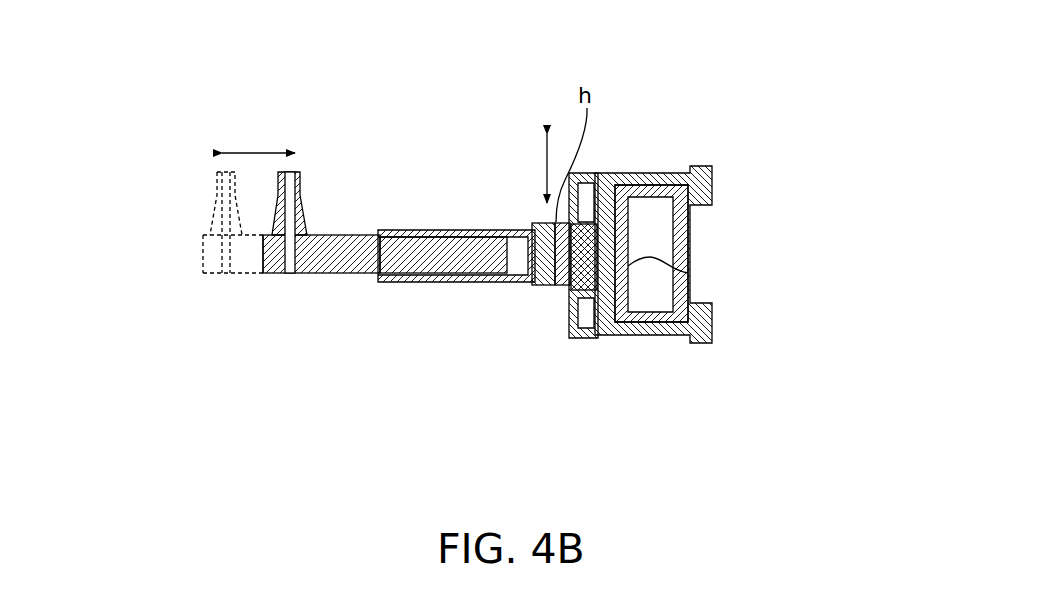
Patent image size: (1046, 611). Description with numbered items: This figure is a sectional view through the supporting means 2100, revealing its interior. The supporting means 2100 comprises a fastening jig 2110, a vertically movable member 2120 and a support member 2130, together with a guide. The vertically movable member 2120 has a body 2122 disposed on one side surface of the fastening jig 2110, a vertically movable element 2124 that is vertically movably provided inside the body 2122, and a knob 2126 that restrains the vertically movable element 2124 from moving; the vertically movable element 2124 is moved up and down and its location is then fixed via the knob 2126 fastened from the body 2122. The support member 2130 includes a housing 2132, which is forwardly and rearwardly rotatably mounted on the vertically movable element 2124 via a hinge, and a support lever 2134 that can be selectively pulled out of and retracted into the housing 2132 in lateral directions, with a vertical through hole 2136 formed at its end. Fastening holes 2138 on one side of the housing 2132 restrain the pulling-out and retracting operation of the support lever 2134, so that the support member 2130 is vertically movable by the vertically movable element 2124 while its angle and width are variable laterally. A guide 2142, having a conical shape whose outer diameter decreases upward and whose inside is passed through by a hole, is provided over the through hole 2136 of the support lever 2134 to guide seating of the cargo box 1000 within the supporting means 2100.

The electronic device / sensor 1000 is at (688, 273).
The supporting means 2100 is at (612, 150).
The fastening jig 2110 is at (657, 172).
The vertically movable member 2120 is at (573, 450).
The body 2122 is at (588, 338).
The vertically movable element 2124 is at (577, 288).
The knob 2126 is at (571, 291).
The support member 2130 is at (433, 386).
The housing 2132 is at (434, 283).
The support lever 2134 is at (355, 275).
The vertical through hole 2136 is at (288, 275).
The fastening holes 2138 is at (403, 254).
The guide 2142 is at (300, 190).